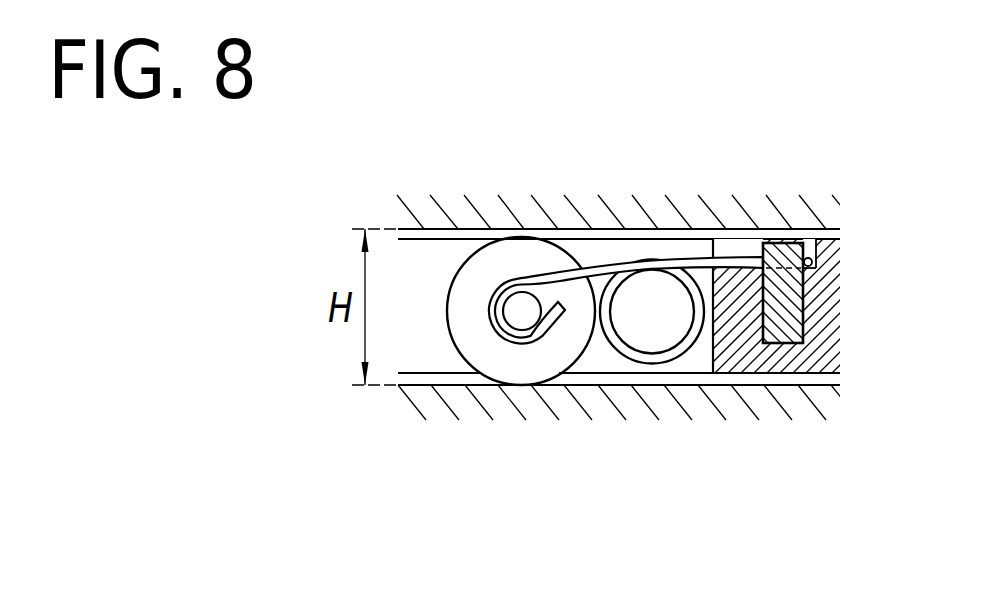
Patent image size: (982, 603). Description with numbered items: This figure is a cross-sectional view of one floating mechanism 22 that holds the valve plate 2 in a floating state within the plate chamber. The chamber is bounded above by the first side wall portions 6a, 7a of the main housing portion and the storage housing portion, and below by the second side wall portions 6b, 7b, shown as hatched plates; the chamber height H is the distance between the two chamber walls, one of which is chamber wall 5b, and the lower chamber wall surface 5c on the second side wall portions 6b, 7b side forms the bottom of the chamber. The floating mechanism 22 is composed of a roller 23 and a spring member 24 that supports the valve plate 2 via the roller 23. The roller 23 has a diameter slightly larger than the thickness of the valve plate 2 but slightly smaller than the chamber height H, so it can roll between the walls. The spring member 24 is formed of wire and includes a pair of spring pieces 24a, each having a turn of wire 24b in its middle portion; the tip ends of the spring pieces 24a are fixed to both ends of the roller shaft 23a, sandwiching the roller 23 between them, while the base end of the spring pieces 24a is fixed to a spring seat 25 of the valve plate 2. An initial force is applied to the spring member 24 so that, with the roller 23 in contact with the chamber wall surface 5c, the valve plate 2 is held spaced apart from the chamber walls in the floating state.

The valve plate 2 is at (813, 298).
The chamber wall 5b is at (437, 243).
The chamber wall surface 5c is at (453, 373).
The first side wall portion 6a is at (601, 176).
The first side wall portion 7a is at (423, 217).
The second side wall portion 6b is at (628, 466).
The second side wall portion 7b is at (468, 400).
The floating mechanism 22 is at (678, 178).
The roller 23 is at (522, 367).
The roller shaft 23a is at (523, 317).
The spring member 24 is at (663, 391).
The spring piece 24a is at (703, 262).
The turn of wire 24b is at (653, 355).
The spring seat 25 is at (748, 328).